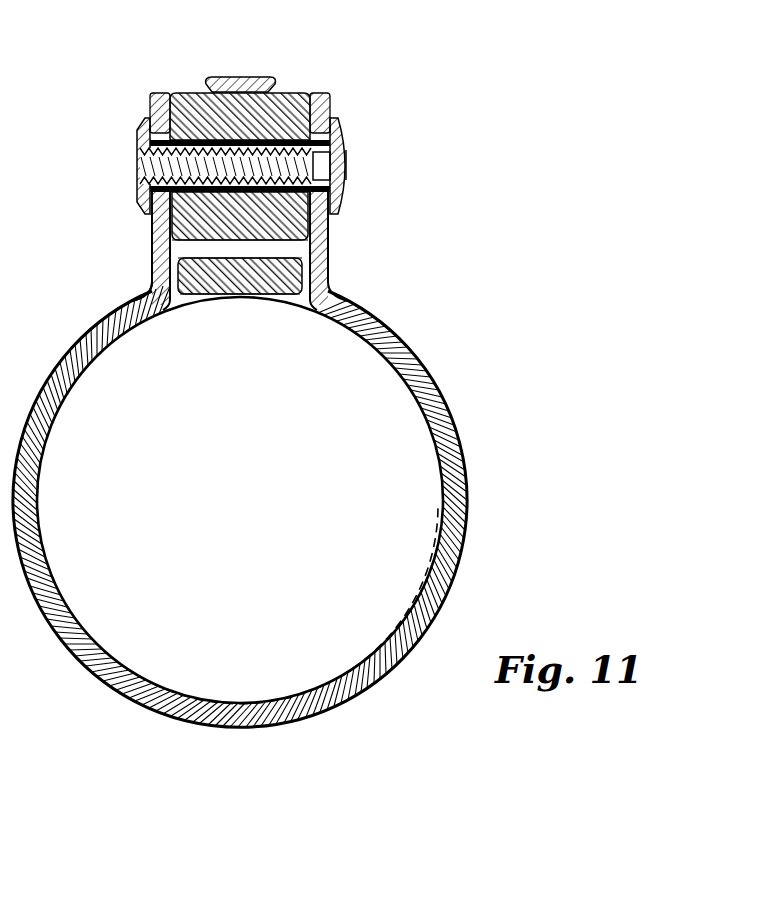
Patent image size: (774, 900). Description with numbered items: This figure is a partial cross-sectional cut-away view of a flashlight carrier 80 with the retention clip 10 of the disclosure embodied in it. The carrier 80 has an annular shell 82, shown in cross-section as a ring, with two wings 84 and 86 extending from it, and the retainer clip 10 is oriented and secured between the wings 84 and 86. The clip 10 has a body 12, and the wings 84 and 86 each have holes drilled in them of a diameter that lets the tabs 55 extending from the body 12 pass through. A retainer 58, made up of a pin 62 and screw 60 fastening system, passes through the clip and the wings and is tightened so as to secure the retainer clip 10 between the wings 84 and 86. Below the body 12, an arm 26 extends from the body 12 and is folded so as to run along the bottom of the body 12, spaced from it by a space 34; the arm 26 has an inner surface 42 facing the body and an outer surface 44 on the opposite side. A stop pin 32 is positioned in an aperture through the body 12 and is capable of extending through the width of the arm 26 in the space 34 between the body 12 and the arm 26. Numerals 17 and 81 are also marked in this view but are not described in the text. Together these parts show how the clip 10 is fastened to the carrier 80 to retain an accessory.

The retainer clip 10 is at (239, 51).
The body 12 is at (305, 97).
The upper housing block 17 is at (292, 103).
The arm 26 is at (287, 275).
The stop pin 32 is at (228, 78).
The space 34 is at (193, 248).
The inner surface 42 is at (263, 253).
The outer surface 44 is at (240, 298).
The tabs 55 is at (152, 130).
The retainer 58 is at (123, 152).
The screw 60 is at (347, 149).
The pin 62 is at (138, 197).
The flashlight carrier 80 is at (383, 220).
The housing foot 81 is at (153, 293).
The annular shell 82 is at (466, 476).
The wing 84 is at (330, 96).
The wing 86 is at (160, 93).